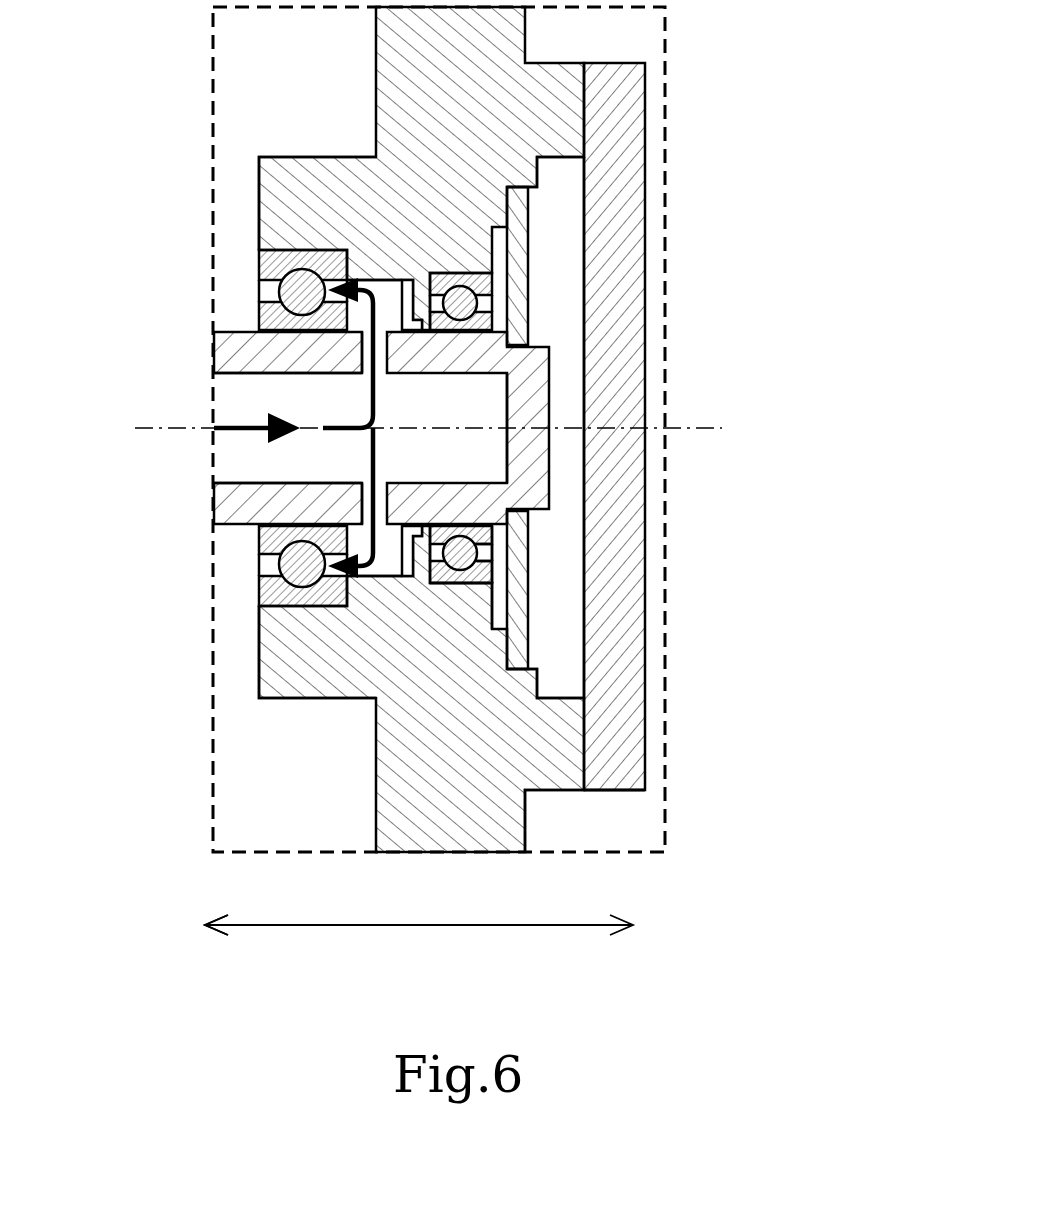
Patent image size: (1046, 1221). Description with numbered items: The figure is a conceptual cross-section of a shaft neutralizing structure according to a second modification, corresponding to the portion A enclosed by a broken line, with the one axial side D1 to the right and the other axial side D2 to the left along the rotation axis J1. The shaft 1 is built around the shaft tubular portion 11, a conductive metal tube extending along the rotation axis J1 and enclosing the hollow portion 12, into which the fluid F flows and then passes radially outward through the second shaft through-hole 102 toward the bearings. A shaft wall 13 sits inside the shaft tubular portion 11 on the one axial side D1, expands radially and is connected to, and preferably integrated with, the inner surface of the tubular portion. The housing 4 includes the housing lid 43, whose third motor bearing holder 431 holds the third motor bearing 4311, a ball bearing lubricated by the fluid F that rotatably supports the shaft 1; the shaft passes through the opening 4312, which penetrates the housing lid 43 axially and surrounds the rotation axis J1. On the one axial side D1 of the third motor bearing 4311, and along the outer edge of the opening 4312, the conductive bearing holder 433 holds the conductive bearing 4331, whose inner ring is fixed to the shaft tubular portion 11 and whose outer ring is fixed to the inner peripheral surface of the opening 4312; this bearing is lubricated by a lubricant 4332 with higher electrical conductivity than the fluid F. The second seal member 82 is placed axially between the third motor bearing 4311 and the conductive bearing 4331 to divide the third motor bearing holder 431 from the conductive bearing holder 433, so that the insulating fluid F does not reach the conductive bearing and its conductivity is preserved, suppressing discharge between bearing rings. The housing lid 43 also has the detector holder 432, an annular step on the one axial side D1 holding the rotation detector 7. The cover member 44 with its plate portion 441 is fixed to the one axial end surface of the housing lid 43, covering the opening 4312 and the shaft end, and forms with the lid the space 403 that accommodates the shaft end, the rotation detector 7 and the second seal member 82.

The shaft 1 is at (547, 395).
The shaft tubular portion 11 is at (228, 500).
The hollow portion 12 is at (245, 462).
The shaft wall 13 is at (533, 458).
The second shaft through-hole 102 is at (357, 352).
The housing 4 is at (548, 810).
The housing lid 43 is at (410, 827).
The third motor bearing holder 431 is at (275, 199).
The third motor bearing 4311 is at (268, 268).
The opening 4312 is at (385, 280).
The detector holder 432 is at (518, 172).
The conductive bearing holder 433 is at (473, 603).
The conductive bearing 4331 is at (480, 522).
The lubricant 4332 is at (485, 555).
The space 403 is at (548, 637).
The cover member 44 is at (650, 712).
The plate portion 441 is at (613, 762).
The rotation detector 7 is at (527, 227).
The second seal member 82 is at (445, 302).
The portion A is at (213, 58).
The fluid F is at (243, 425).
The rotation axis J1 is at (178, 428).
The one axial side D1 is at (456, 925).
The other axial side D2 is at (181, 925).